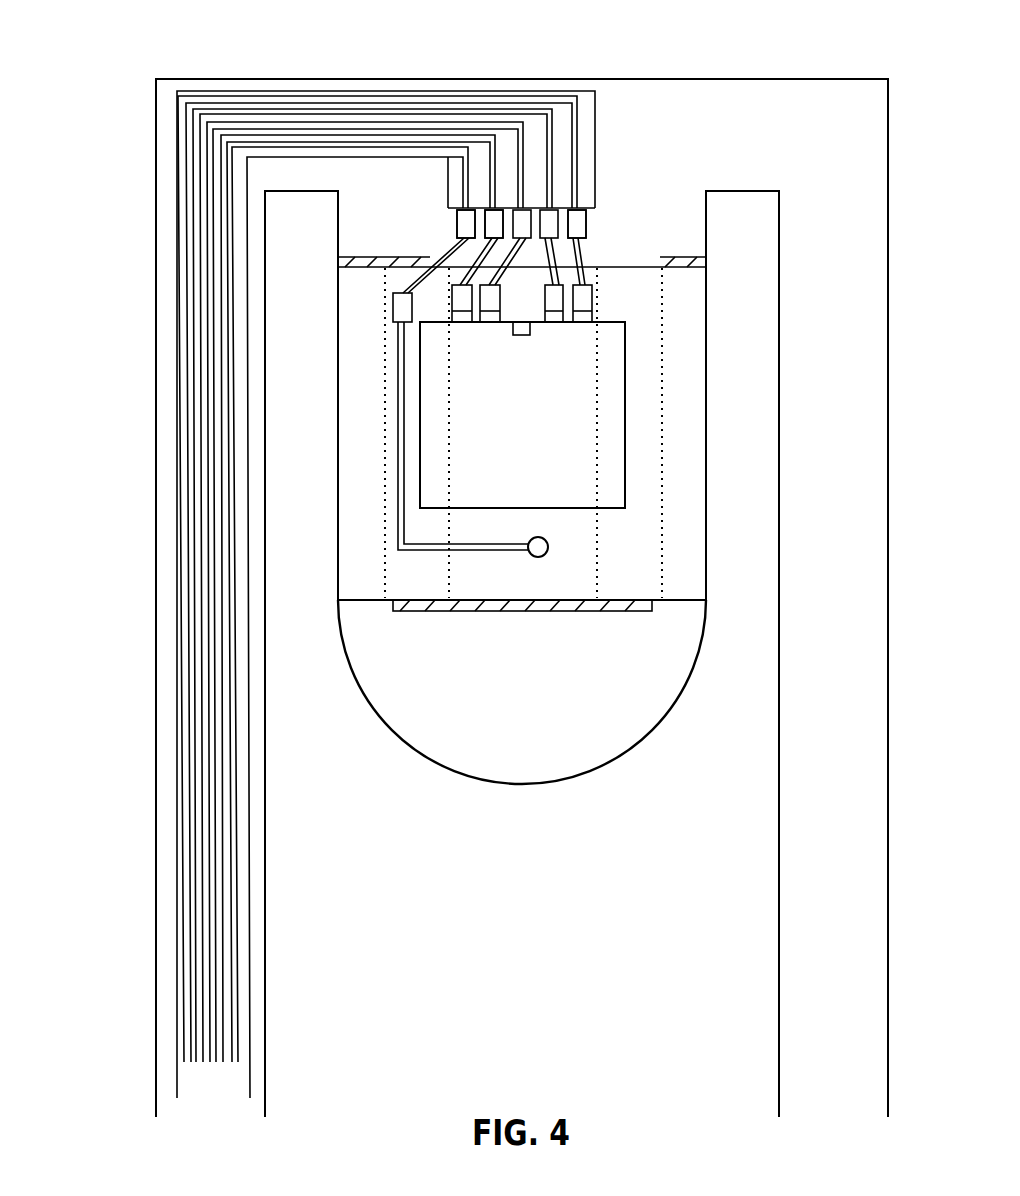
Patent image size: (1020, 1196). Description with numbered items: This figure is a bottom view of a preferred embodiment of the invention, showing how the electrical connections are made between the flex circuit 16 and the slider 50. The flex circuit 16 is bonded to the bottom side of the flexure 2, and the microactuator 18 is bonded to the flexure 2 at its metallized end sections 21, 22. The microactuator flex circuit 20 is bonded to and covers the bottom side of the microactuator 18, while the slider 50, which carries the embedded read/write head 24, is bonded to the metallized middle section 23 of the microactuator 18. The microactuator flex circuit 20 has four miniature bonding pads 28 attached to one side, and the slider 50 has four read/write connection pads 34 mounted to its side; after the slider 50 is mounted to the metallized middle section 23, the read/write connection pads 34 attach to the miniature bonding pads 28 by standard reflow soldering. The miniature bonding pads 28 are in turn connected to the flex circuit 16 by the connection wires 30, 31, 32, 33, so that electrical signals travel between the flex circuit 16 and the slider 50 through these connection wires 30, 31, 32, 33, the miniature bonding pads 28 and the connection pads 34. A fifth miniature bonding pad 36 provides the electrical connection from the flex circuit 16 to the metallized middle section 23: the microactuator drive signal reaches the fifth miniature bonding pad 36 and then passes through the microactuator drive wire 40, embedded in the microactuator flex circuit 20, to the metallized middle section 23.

The flexure 2 is at (628, 757).
The flex circuit 16 is at (172, 513).
The microactuator 18 is at (533, 620).
The microactuator flex circuit 20 is at (347, 490).
The metallized end section 21 is at (343, 260).
The metallized end section 22 is at (680, 253).
The metallized middle section 23 is at (487, 612).
The read/write head 24 is at (531, 332).
The miniature bonding pads 28 is at (488, 272).
The connection wire 30 is at (560, 245).
The connection wire 31 is at (583, 247).
The connection wire 32 is at (502, 247).
The connection wire 33 is at (466, 228).
The read/write connection pads 34 is at (452, 315).
The fifth miniature bonding pad 36 is at (402, 294).
The microactuator drive wire 40 is at (398, 418).
The slider 50 is at (627, 448).